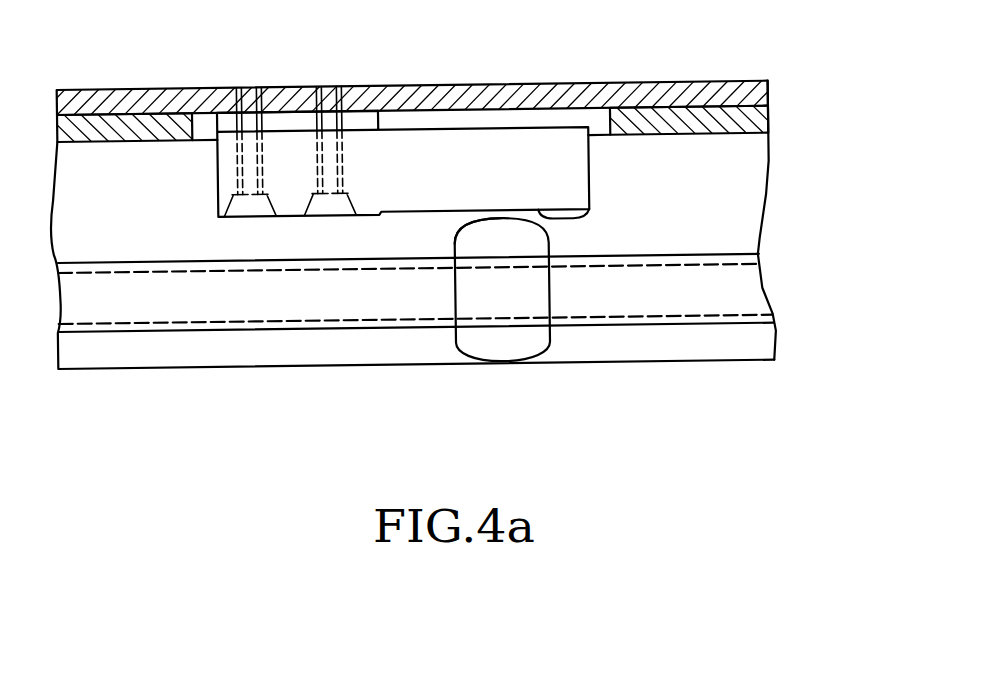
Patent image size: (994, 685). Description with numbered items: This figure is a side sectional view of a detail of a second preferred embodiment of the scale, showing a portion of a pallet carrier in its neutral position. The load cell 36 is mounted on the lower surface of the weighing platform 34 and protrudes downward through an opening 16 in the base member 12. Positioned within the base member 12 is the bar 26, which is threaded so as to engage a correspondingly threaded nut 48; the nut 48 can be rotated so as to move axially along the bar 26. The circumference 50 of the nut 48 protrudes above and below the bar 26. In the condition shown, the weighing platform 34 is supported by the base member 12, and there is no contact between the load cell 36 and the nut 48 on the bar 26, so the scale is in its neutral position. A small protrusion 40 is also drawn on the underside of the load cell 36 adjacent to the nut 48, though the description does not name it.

The base member 12 is at (772, 136).
The opening 16 is at (597, 131).
The bar 26 is at (193, 315).
The weighing platform 34 is at (607, 82).
The load cell 36 is at (398, 137).
The protrusion 40 is at (563, 222).
The nut 48 is at (512, 288).
The circumference 50 is at (462, 229).